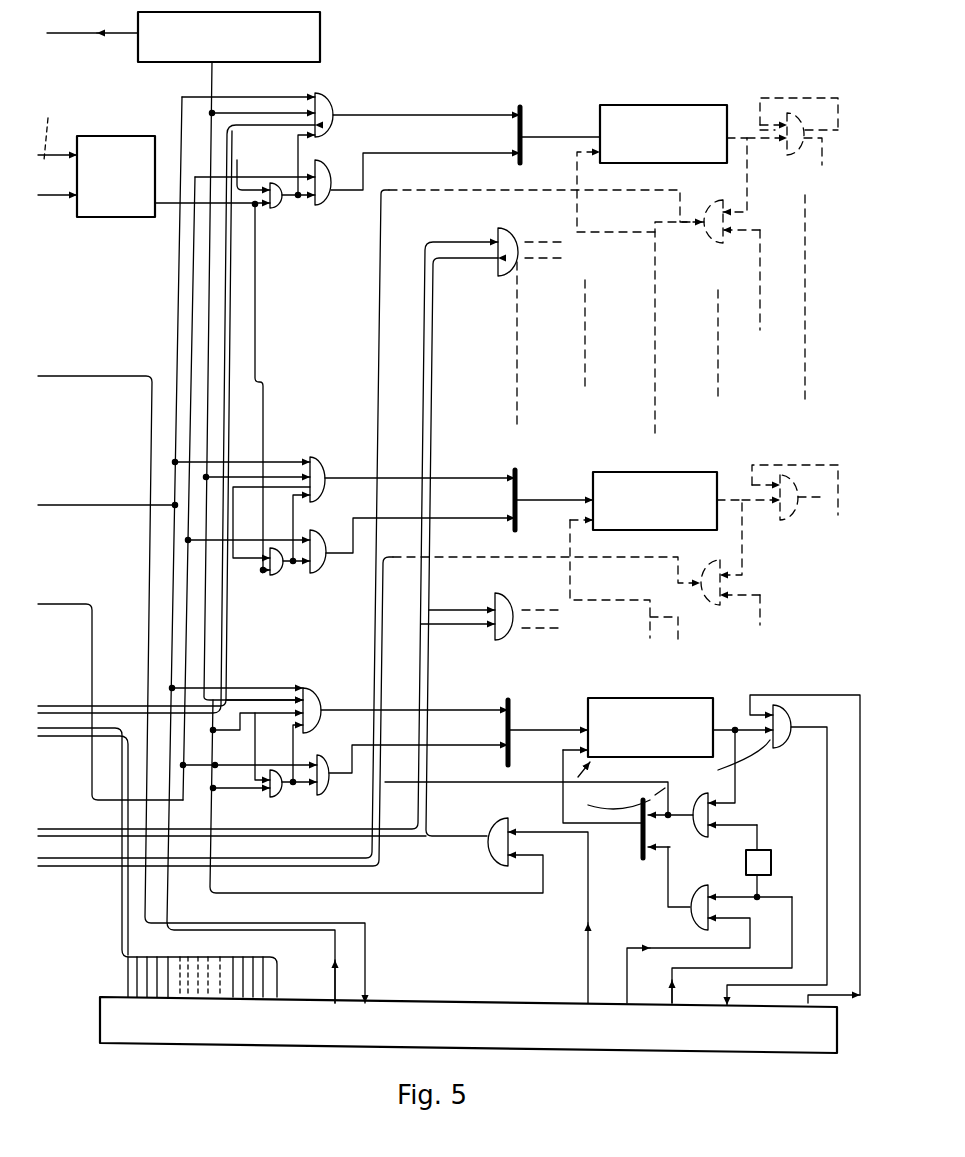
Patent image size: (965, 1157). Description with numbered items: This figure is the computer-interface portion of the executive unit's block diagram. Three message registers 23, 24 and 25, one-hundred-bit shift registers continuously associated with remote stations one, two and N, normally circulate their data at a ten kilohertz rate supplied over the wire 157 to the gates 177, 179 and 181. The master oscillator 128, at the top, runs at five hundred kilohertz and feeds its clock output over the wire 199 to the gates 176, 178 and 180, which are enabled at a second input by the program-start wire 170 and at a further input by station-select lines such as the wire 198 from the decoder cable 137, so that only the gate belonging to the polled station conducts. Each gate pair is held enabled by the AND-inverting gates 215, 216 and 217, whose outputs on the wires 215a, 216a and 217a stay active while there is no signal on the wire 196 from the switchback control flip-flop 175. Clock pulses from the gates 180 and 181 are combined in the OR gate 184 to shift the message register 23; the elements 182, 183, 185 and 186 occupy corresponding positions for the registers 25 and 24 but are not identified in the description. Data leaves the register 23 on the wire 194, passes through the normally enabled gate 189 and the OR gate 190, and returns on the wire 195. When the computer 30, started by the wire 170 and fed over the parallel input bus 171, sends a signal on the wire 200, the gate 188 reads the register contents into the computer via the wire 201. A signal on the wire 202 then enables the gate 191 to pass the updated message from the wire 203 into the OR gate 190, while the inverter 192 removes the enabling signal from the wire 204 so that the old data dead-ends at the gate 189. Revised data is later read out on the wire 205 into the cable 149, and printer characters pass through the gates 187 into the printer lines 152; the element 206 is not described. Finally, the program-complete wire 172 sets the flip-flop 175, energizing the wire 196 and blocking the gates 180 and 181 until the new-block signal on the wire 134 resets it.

The master oscillator 128 is at (322, 27).
The wire 199 is at (210, 72).
The switchback control flip-flop 175 is at (143, 136).
The wire 134 is at (53, 128).
The wire 170 is at (182, 240).
The wire 157 is at (290, 177).
The cable 137 is at (228, 358).
The wire 196 is at (257, 272).
The wire 172 is at (80, 376).
The parallel input bus 171 is at (76, 730).
The printer lines 152 is at (428, 370).
The cable 149 is at (380, 626).
The wire 198 is at (282, 700).
The gate 176 is at (328, 105).
The gate 177 is at (327, 180).
The AND-inverting gate 215 is at (240, 210).
The wire 215a is at (296, 205).
The gating bar 182 is at (523, 128).
The message register 25 is at (680, 112).
The AND gate 185 is at (505, 245).
The gate 178 is at (320, 465).
The gate 179 is at (322, 540).
The AND-inverting gate 216 is at (279, 578).
The wire 216a is at (288, 575).
The gating bar 183 is at (520, 495).
The message register 24 is at (705, 478).
The AND gate 186 is at (505, 610).
The gate 180 is at (320, 712).
The gate 181 is at (326, 770).
The AND inverting gate 217 is at (280, 790).
The wire 217a is at (290, 770).
The OR gate 184 is at (512, 718).
The message register 23 is at (705, 708).
The gates 187 is at (495, 828).
The wire 205 is at (490, 782).
The wire 195 is at (562, 802).
The OR gate 190 is at (640, 836).
The wire 194 is at (736, 750).
The gate 188 is at (788, 728).
The wire 200 is at (845, 695).
The wire 201 is at (826, 822).
The gate 189 is at (716, 820).
The wire 204 is at (757, 837).
The inverter 192 is at (772, 862).
The wire 202 is at (760, 892).
The AND gate 191 is at (714, 890).
The wire 203 is at (752, 932).
The print line 206 is at (588, 898).
The computer 30 is at (195, 1033).